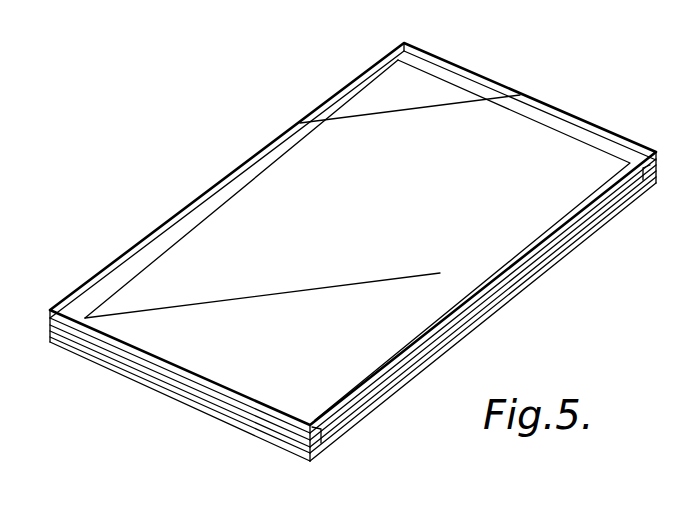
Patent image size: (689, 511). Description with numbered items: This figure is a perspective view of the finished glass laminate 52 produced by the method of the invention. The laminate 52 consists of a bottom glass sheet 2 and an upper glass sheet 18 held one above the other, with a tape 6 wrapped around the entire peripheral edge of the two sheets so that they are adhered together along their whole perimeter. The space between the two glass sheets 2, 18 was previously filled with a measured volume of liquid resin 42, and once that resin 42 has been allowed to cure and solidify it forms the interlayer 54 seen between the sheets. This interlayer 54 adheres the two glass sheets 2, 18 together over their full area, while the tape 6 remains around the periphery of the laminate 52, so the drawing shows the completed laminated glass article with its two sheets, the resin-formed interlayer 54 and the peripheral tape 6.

The bottom glass sheet 2 is at (251, 430).
The tape 6 is at (458, 329).
The upper glass sheet 18 is at (183, 373).
The liquid resin 42 is at (563, 138).
The glass laminate 52 is at (611, 222).
The interlayer 54 is at (300, 408).